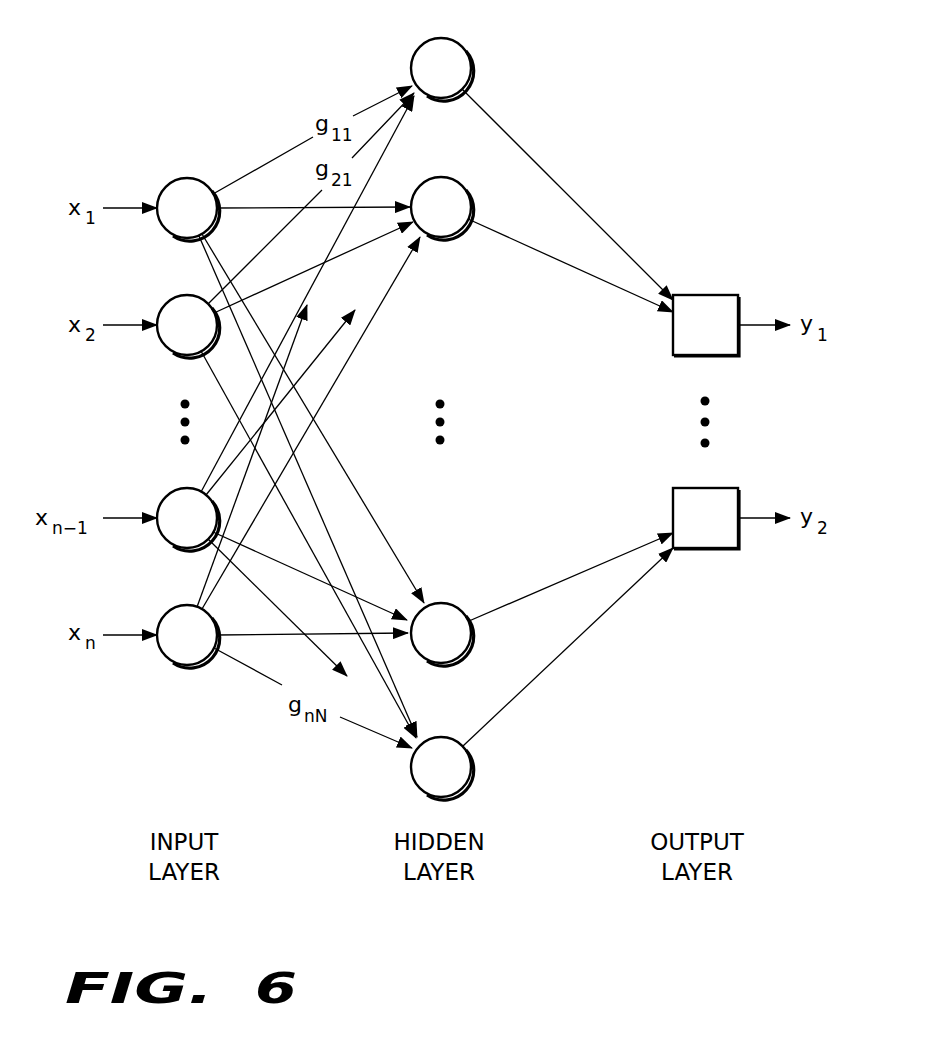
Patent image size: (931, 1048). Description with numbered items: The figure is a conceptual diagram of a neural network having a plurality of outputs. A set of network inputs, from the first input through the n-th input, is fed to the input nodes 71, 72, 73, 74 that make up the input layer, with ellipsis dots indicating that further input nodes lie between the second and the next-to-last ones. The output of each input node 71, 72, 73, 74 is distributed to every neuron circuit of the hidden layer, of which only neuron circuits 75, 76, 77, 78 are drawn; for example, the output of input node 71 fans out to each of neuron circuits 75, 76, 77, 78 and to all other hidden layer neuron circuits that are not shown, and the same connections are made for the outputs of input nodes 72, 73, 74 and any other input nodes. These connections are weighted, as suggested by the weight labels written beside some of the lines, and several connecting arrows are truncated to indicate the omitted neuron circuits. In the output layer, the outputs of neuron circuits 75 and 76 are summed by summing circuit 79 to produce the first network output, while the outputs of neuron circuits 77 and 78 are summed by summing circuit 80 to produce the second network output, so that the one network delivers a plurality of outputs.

The input node 71 is at (162, 187).
The input node 72 is at (162, 304).
The input node 73 is at (162, 497).
The input node 74 is at (162, 614).
The neuron circuit 75 is at (468, 52).
The neuron circuit 76 is at (455, 237).
The neuron circuit 77 is at (455, 603).
The neuron circuit 78 is at (447, 736).
The summing circuit 79 is at (713, 295).
The summing circuit 80 is at (713, 548).